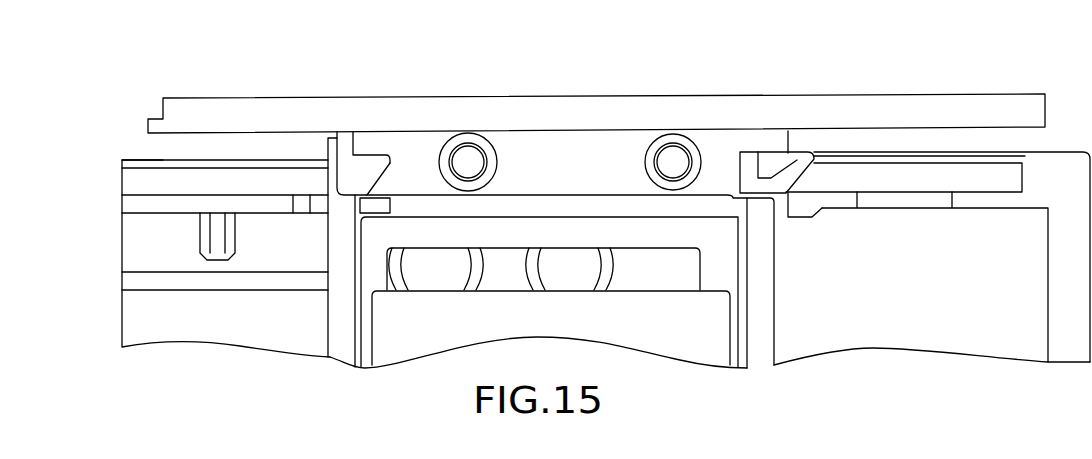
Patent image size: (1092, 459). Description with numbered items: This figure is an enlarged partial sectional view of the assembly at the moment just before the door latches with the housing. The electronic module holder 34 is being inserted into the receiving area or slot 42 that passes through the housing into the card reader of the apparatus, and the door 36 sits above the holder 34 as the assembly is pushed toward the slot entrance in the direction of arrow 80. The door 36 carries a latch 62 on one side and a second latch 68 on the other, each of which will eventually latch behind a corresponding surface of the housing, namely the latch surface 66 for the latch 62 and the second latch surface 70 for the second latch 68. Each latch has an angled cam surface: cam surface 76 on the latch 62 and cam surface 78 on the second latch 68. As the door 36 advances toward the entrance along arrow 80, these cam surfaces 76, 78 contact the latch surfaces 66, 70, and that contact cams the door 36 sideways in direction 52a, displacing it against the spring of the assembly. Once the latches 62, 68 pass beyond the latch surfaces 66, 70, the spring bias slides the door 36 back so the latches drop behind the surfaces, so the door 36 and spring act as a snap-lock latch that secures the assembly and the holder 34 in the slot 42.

The electronic module holder 34 is at (393, 348).
The door 36 is at (605, 97).
The receiving area (slot) 42 is at (774, 290).
The direction 52a is at (660, 40).
The latch 62 is at (784, 168).
The latch surface 66 is at (837, 197).
The second latch 68 is at (362, 172).
The second latch surface 70 is at (382, 208).
The cam surface 76 is at (803, 180).
The cam surface 78 is at (380, 171).
The arrow 80 is at (543, 80).